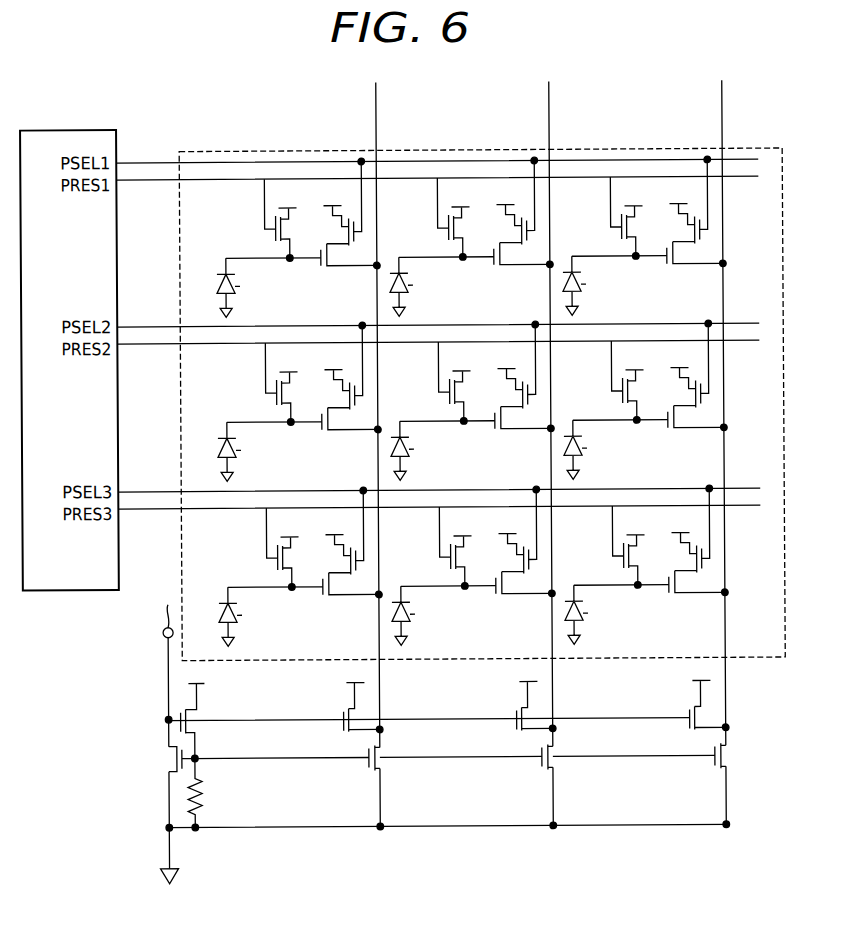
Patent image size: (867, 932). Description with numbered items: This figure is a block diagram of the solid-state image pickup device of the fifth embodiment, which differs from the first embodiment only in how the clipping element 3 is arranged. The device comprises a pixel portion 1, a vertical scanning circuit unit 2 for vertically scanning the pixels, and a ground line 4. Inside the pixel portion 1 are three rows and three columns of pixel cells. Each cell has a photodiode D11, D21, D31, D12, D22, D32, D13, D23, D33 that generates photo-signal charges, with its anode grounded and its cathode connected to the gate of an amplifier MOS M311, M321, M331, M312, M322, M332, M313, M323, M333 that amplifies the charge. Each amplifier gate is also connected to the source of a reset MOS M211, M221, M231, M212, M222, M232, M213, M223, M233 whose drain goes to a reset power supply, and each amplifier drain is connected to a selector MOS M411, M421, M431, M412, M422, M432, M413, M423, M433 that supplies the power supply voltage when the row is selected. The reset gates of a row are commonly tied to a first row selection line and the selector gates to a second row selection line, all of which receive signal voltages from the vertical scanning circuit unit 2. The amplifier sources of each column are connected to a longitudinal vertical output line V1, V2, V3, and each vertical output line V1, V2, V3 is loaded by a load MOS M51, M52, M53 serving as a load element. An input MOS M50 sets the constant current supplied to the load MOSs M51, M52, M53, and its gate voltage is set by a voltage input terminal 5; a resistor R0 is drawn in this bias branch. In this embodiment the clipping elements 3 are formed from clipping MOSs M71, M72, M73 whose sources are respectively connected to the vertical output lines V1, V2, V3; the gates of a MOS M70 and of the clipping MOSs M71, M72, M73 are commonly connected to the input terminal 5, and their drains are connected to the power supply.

The pixel portion 1 is at (212, 148).
The vertical scanning circuit unit 2 is at (40, 127).
The clipping element 3 is at (308, 711).
The GND line 4 is at (163, 846).
The voltage input terminal 5 is at (168, 727).
The vertical output line V1 is at (378, 103).
The vertical output line V2 is at (551, 103).
The vertical output line V3 is at (724, 103).
The reset MOS M211 is at (272, 220).
The reset MOS M221 is at (445, 219).
The reset MOS M231 is at (618, 218).
The reset MOS M212 is at (273, 384).
The reset MOS M222 is at (446, 383).
The reset MOS M232 is at (619, 382).
The reset MOS M213 is at (274, 549).
The reset MOS M223 is at (447, 548).
The reset MOS M233 is at (620, 547).
The amplifier MOS M311 is at (342, 269).
The amplifier MOS M321 is at (515, 268).
The amplifier MOS M331 is at (688, 267).
The amplifier MOS M312 is at (343, 433).
The amplifier MOS M322 is at (516, 432).
The amplifier MOS M332 is at (689, 431).
The amplifier MOS M313 is at (344, 598).
The amplifier MOS M323 is at (517, 597).
The amplifier MOS M333 is at (690, 596).
The selector MOS M411 is at (349, 212).
The selector MOS M421 is at (522, 211).
The selector MOS M431 is at (695, 210).
The selector MOS M412 is at (350, 376).
The selector MOS M422 is at (523, 375).
The selector MOS M432 is at (696, 374).
The selector MOS M413 is at (351, 541).
The selector MOS M423 is at (524, 540).
The selector MOS M433 is at (697, 539).
The photodiode D11 is at (242, 287).
The photodiode D21 is at (415, 286).
The photodiode D31 is at (588, 285).
The photodiode D12 is at (243, 451).
The photodiode D22 is at (416, 450).
The photodiode D32 is at (589, 449).
The photodiode D13 is at (244, 616).
The photodiode D23 is at (417, 615).
The photodiode D33 is at (590, 614).
The MOS M70 is at (200, 693).
The clipping MOS M71 is at (343, 704).
The clipping MOS M72 is at (516, 704).
The clipping MOS M73 is at (689, 704).
The input MOS M50 is at (168, 758).
The load MOS M51 is at (383, 765).
The load MOS M52 is at (556, 765).
The load MOS M53 is at (729, 765).
The resistor R0 is at (203, 790).